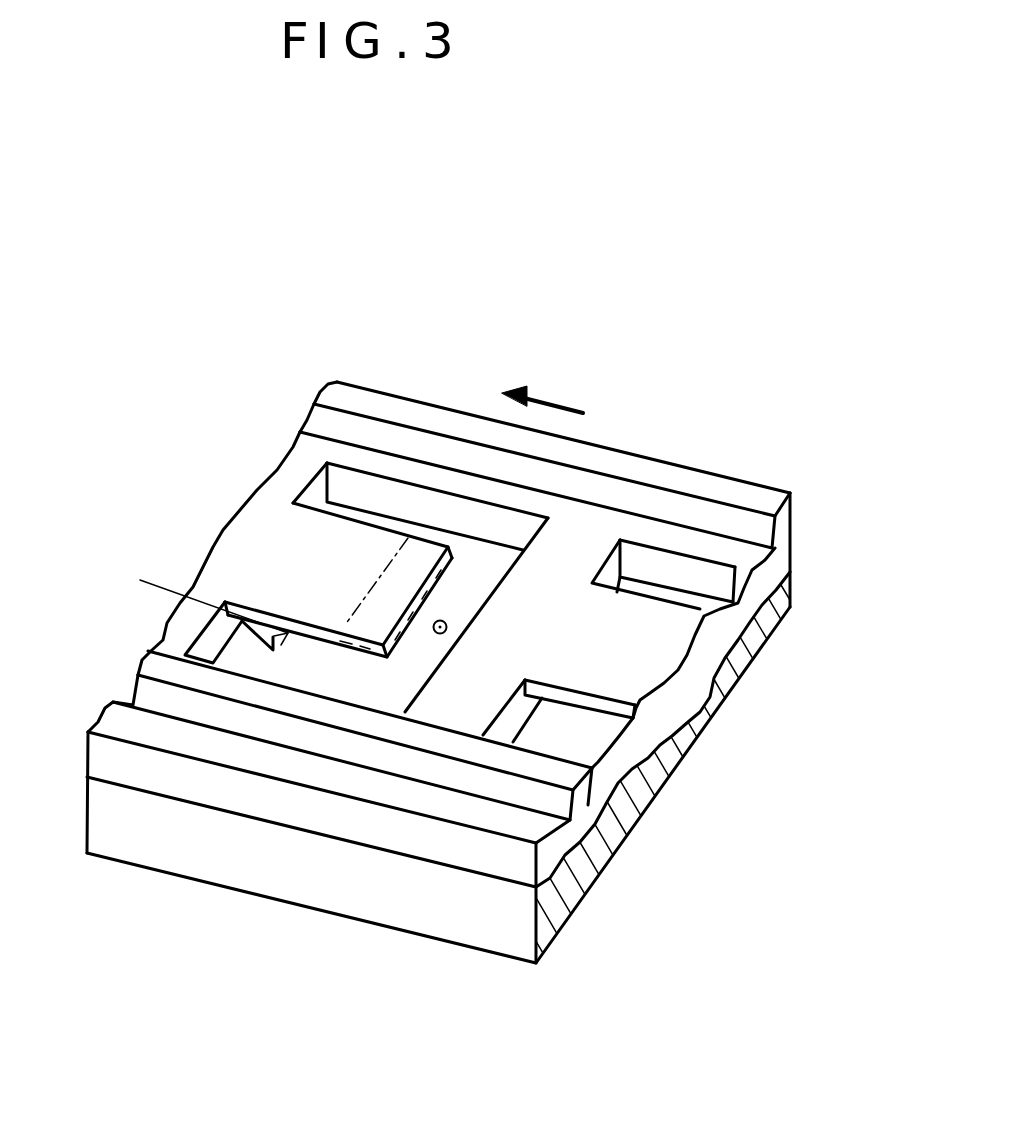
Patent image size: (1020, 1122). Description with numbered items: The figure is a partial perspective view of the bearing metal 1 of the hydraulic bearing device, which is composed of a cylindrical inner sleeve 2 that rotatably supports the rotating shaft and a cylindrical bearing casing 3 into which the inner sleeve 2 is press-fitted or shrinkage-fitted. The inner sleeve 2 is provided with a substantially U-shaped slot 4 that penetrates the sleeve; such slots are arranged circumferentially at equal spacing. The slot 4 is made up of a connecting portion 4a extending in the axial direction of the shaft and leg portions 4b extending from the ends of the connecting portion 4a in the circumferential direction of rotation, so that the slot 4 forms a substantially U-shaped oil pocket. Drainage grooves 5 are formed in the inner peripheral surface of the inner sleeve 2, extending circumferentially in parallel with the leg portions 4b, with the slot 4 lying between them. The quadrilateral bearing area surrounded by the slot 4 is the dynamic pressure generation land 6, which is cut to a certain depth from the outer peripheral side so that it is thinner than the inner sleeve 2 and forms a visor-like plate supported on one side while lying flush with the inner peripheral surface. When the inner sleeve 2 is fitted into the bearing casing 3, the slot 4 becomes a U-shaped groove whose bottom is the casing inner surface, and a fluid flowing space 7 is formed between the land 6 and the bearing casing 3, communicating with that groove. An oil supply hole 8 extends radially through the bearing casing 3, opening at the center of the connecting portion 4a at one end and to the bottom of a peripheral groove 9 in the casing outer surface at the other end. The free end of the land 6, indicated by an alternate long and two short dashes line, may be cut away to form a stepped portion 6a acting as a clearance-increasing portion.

The bearing metal 1 is at (848, 590).
The inner sleeve 2 is at (785, 528).
The bearing casing 3 is at (768, 598).
The substantially U-shaped slot 4 is at (723, 370).
The connecting portion 4a is at (463, 602).
The leg portions 4b is at (407, 507).
The drainage grooves 5 is at (685, 512).
The dynamic pressure generation land 6 is at (343, 555).
The stepped portion 6a is at (368, 610).
The fluid flowing space 7 is at (200, 601).
The oil supply hole 8 is at (447, 628).
The peripheral groove 9 is at (702, 721).